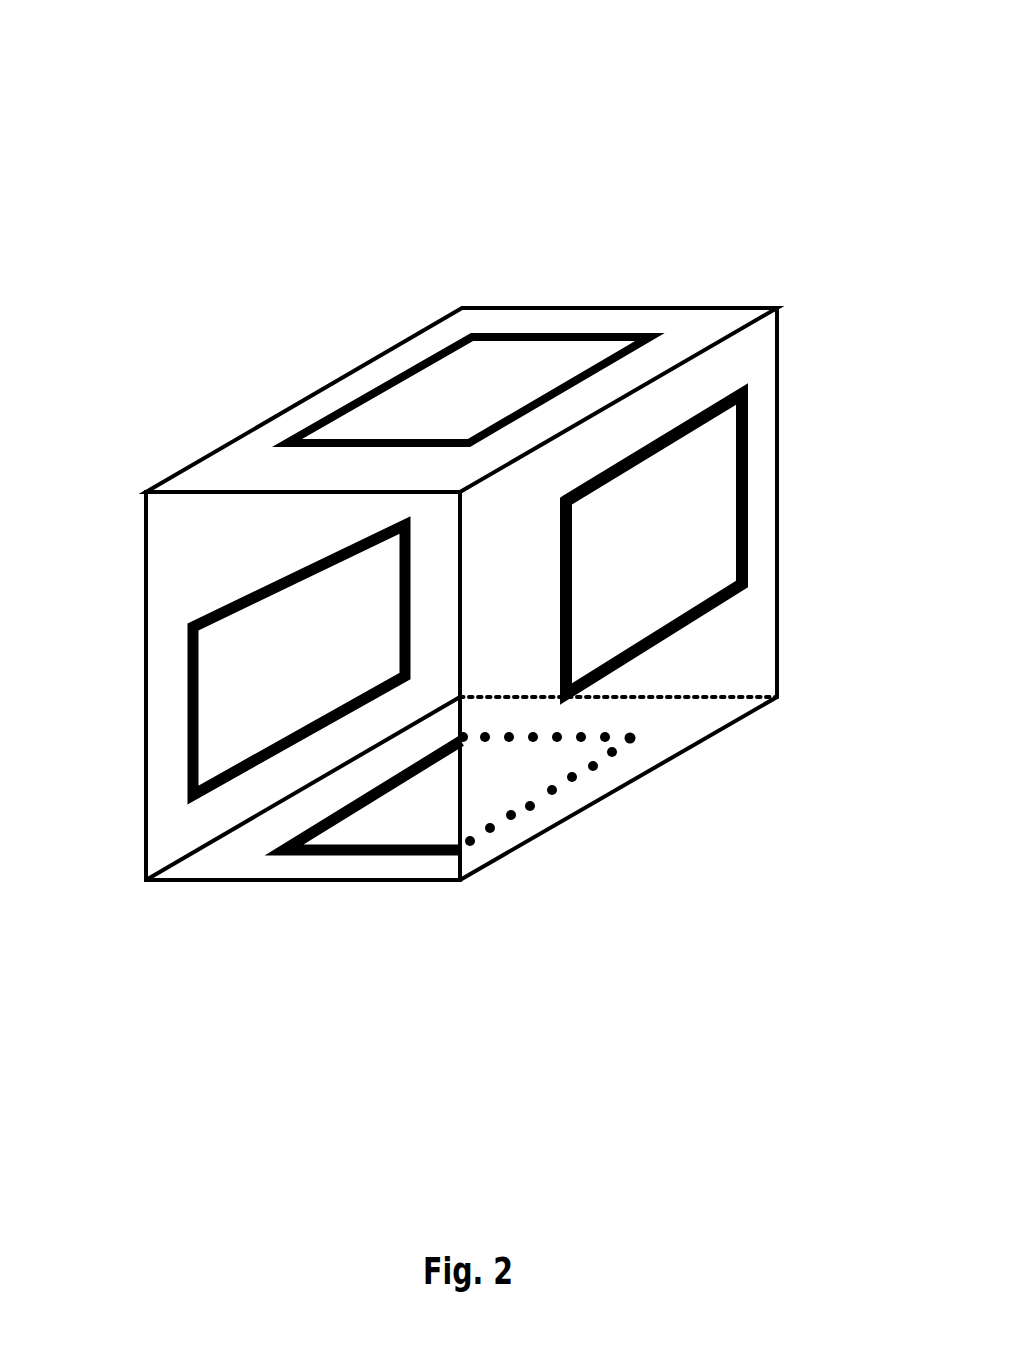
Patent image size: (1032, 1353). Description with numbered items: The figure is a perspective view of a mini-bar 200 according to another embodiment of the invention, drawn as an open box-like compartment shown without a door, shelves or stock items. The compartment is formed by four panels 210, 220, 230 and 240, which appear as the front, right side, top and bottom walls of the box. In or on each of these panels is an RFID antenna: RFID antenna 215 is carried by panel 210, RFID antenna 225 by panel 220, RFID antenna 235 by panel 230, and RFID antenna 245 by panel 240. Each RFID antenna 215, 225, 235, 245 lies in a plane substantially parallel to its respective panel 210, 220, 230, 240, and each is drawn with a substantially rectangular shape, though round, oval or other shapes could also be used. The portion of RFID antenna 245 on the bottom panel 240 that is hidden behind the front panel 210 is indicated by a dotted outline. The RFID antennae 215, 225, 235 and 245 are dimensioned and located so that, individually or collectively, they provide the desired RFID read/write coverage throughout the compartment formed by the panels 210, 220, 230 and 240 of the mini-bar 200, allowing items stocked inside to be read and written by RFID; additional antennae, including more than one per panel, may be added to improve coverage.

The mini-bar 200 is at (686, 139).
The panel 210 is at (265, 686).
The RFID antenna 215 is at (236, 668).
The panel 220 is at (665, 594).
The RFID antenna 225 is at (724, 544).
The panel 230 is at (468, 340).
The RFID antenna 235 is at (461, 400).
The panel 240 is at (304, 854).
The RFID antenna 245 is at (547, 841).